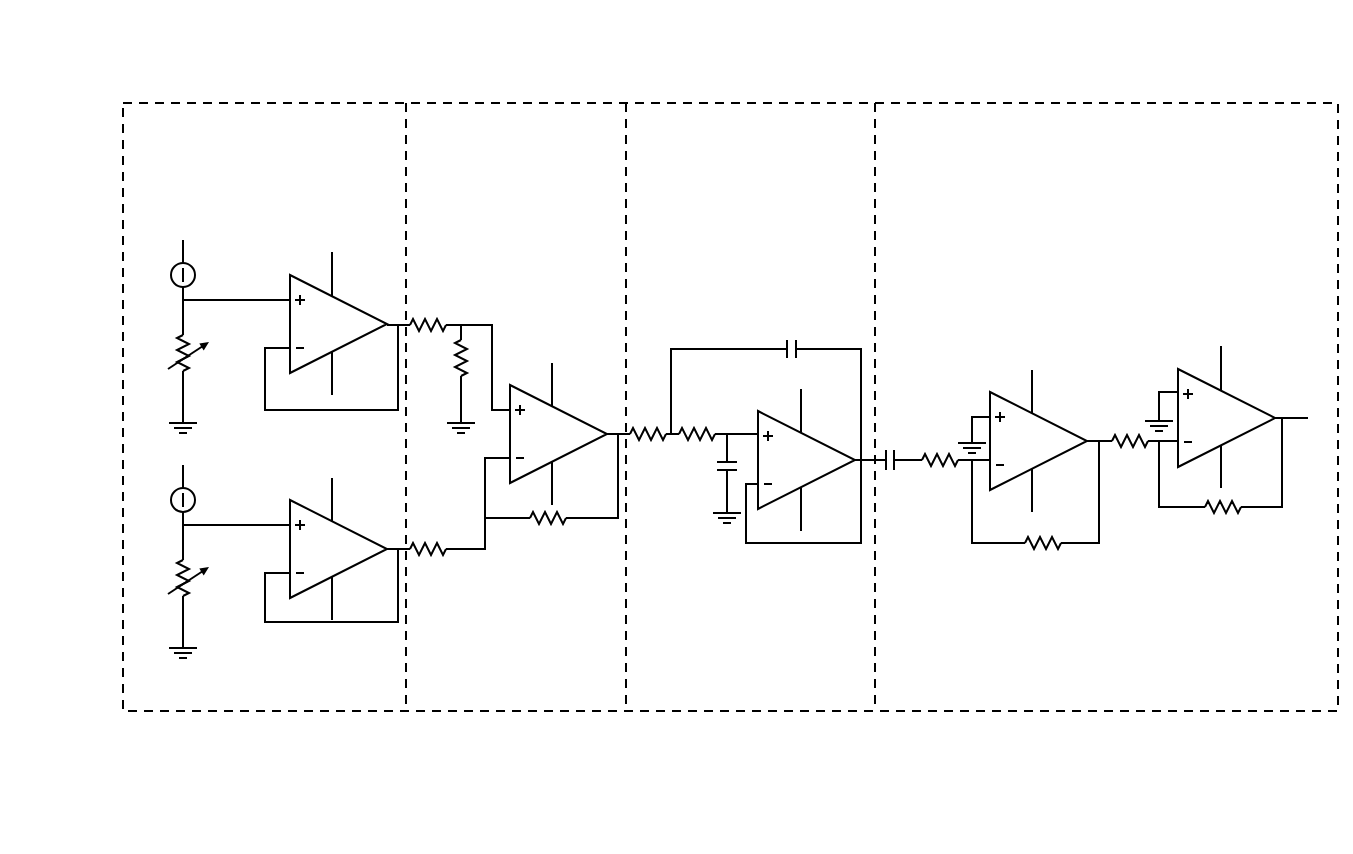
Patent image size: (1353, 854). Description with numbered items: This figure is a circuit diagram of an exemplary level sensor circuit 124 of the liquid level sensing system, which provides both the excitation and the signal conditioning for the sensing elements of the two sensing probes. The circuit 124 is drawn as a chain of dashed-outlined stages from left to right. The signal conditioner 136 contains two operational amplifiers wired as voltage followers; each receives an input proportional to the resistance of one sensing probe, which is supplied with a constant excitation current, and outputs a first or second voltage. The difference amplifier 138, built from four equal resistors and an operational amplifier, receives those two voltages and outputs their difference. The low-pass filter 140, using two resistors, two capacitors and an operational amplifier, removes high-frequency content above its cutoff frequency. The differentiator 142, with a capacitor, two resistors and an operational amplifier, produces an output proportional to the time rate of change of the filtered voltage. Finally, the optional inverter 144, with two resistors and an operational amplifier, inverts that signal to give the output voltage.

The circuit 124 is at (1163, 60).
The signal conditioner 136 is at (270, 359).
The difference amplifier 138 is at (519, 332).
The low-pass filter 140 is at (752, 301).
The differentiator 142 is at (993, 318).
The inverter 144 is at (1225, 311).